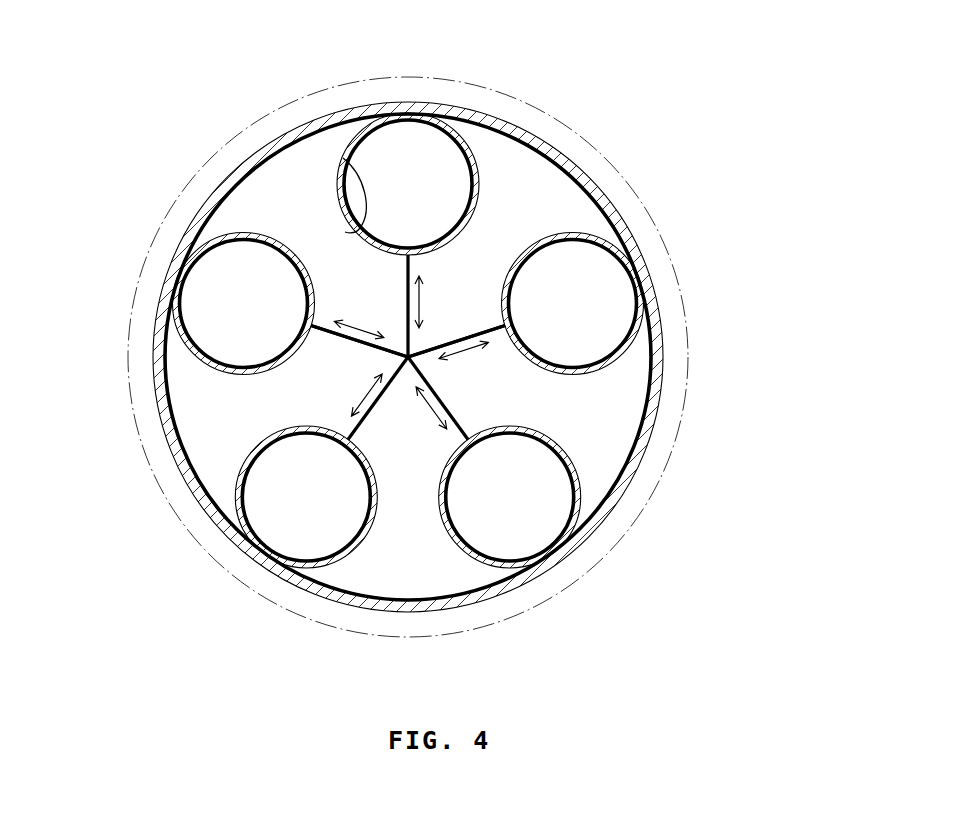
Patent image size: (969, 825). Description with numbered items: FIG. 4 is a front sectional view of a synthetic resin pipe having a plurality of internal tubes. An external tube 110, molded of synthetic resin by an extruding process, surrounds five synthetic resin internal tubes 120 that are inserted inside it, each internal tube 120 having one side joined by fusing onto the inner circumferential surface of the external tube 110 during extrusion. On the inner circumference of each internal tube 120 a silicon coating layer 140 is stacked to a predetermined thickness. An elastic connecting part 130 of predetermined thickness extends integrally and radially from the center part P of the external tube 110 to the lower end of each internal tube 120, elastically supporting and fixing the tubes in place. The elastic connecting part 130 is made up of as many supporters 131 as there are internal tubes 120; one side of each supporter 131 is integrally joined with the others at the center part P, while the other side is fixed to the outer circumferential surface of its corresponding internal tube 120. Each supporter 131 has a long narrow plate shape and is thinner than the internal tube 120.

The external tube 110 is at (560, 163).
The internal tube 120 is at (417, 183).
The elastic connecting part 130 is at (385, 317).
The supporter 131 is at (408, 360).
The silicon coating layer 140 is at (352, 236).
The center part P is at (410, 360).